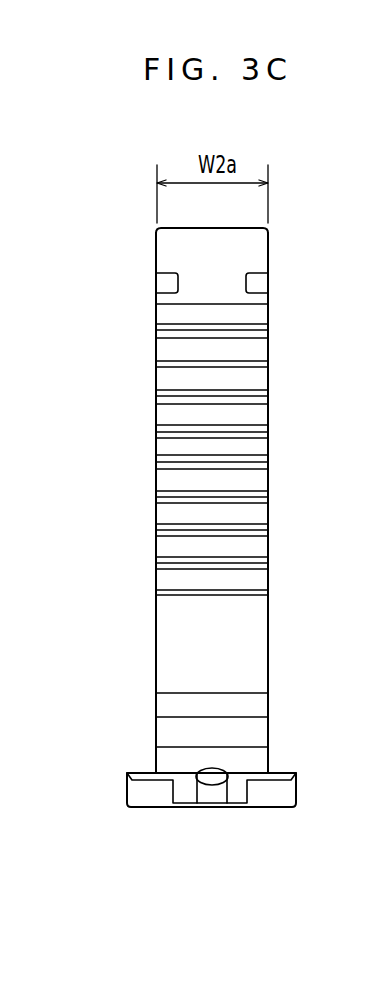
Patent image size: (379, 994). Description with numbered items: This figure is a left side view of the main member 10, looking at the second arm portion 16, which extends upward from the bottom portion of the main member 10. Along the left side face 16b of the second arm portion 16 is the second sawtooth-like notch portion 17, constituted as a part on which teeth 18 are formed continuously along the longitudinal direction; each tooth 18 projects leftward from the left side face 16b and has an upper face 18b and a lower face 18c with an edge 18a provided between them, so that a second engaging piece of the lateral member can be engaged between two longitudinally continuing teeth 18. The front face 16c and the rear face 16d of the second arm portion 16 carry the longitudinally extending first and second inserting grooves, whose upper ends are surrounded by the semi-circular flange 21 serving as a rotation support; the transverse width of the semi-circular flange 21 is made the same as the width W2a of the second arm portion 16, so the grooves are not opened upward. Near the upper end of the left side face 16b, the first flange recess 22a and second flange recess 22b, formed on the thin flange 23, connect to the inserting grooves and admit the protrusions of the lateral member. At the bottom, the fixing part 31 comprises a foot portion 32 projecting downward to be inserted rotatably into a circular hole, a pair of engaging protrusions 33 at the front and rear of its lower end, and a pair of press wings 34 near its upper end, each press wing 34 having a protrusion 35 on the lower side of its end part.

The main member 10 is at (283, 228).
The second arm portion 16 is at (157, 358).
The left side face 16b is at (250, 623).
The front face 16c is at (268, 415).
The rear face 16d is at (157, 425).
The second sawtooth-like notch portion 17 is at (272, 450).
The teeth 18 is at (270, 388).
The edge 18a is at (253, 527).
The upper face 18b is at (253, 513).
The lower face 18c is at (237, 532).
The semi-circular flange 21 is at (252, 248).
The first flange recess 22a is at (260, 280).
The second flange recess 22b is at (167, 282).
The thin flange 23 is at (220, 280).
The fixing part 31 is at (155, 738).
The foot portion 32 is at (257, 707).
The engaging protrusions 33 is at (135, 790).
The press wings 34 is at (257, 735).
The protrusion 35 is at (213, 780).